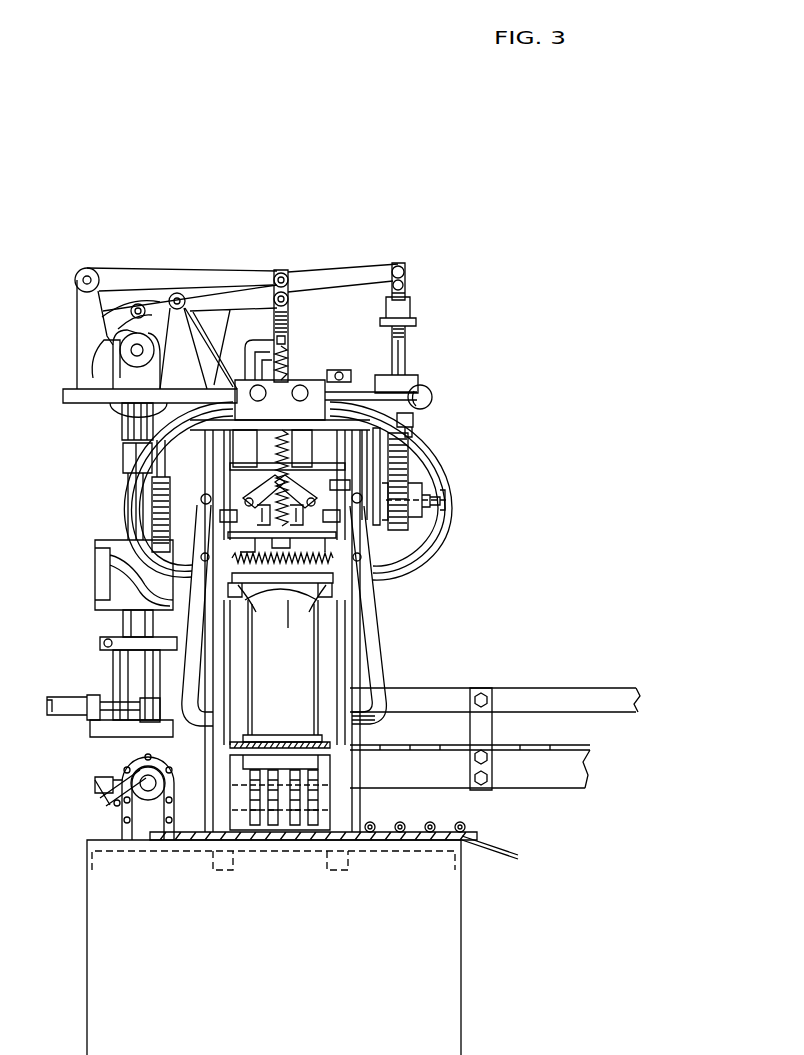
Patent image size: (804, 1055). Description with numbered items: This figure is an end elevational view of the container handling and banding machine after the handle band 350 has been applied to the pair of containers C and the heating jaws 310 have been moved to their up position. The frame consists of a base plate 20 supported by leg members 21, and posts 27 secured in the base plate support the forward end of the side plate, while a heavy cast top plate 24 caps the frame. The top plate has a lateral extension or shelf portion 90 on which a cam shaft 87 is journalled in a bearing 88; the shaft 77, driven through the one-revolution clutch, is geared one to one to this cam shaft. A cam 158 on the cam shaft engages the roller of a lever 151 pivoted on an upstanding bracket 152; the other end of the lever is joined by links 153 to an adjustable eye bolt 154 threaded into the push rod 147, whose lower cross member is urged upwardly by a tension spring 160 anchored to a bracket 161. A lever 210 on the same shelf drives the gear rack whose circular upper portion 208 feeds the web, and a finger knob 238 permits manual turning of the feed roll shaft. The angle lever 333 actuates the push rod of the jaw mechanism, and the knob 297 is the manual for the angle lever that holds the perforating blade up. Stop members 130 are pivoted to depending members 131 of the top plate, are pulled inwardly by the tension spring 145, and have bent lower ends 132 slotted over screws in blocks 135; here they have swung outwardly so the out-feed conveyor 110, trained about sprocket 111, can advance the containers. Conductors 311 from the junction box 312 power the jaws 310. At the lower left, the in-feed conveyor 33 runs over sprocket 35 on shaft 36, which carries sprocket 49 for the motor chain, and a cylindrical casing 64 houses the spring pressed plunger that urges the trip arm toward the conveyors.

The angle lever 333 is at (186, 278).
The lever 151 is at (217, 290).
The links 153 is at (288, 282).
The lever 210 is at (340, 281).
The adjustable eye bolt 154 is at (289, 324).
The push rod 147 is at (288, 347).
The tension spring 160 is at (288, 366).
The bracket 161 is at (255, 345).
The upper portion of the rack 208 is at (404, 357).
The knob 297 is at (433, 397).
The cam shaft 87 is at (131, 350).
The cam 158 is at (105, 357).
The bearing 88 is at (144, 387).
The upstanding bracket 152 is at (165, 369).
The lateral extension 90 is at (75, 400).
The top plate 24 is at (262, 427).
The junction box 312 is at (295, 410).
The shaft 77 is at (132, 467).
The conductors 311 is at (128, 516).
The finger knob 238 is at (445, 508).
The stop members 130 is at (380, 616).
The posts 27 is at (220, 800).
The depending members 131 is at (212, 470).
The tension spring 145 is at (305, 560).
The container C is at (272, 689).
The heating jaws 310 is at (247, 598).
The handle band 350 is at (277, 625).
The out-feed conveyor 110 is at (276, 742).
The blocks 135 is at (352, 752).
The sprocket 111 is at (290, 793).
The in-feed chain conveyor 33 is at (528, 749).
The lower ends of the stop members 132 is at (375, 727).
The cylindrical casing 64 is at (77, 700).
The shaft 36 is at (152, 785).
The sprocket 35 is at (97, 777).
The sprocket 49 is at (143, 796).
The leg members 21 is at (268, 928).
The base plate 20 is at (122, 853).